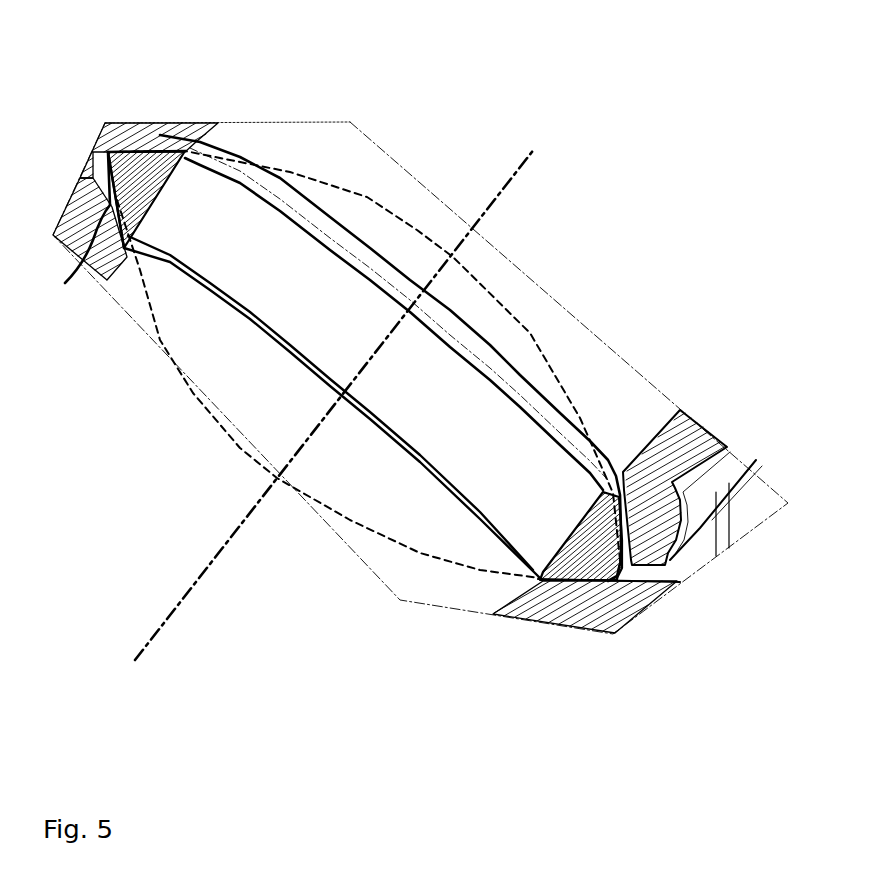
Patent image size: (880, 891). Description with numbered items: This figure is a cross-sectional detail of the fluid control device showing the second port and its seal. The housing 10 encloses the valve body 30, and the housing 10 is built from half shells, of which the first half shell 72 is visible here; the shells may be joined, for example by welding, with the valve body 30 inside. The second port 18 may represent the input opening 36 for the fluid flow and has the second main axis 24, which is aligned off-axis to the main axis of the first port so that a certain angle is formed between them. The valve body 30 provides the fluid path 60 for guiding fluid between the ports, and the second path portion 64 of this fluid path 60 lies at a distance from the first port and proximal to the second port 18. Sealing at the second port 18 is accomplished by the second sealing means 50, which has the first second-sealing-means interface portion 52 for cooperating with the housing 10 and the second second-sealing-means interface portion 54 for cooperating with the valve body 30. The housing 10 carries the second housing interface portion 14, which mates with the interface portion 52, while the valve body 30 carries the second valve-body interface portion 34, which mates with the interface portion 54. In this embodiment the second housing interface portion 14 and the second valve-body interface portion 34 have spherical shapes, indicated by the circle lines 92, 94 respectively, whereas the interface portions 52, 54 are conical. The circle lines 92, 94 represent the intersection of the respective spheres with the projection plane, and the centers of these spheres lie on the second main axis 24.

The housing 10 is at (66, 212).
The second housing interface portion 14 is at (77, 228).
The second port 18 is at (284, 367).
The second main axis 24 is at (170, 613).
The valve body 30 is at (703, 428).
The second valve-body interface portion 34 is at (139, 151).
The input opening 36 is at (413, 488).
The second sealing means 50 is at (587, 530).
The first second-sealing-means interface portion 52 is at (115, 208).
The second second-sealing-means interface portion 54 is at (158, 158).
The fluid path 60 is at (382, 130).
The second path portion 64 is at (474, 330).
The first half shell 72 is at (177, 120).
The circle line 92 is at (190, 388).
The circle line 94 is at (418, 228).